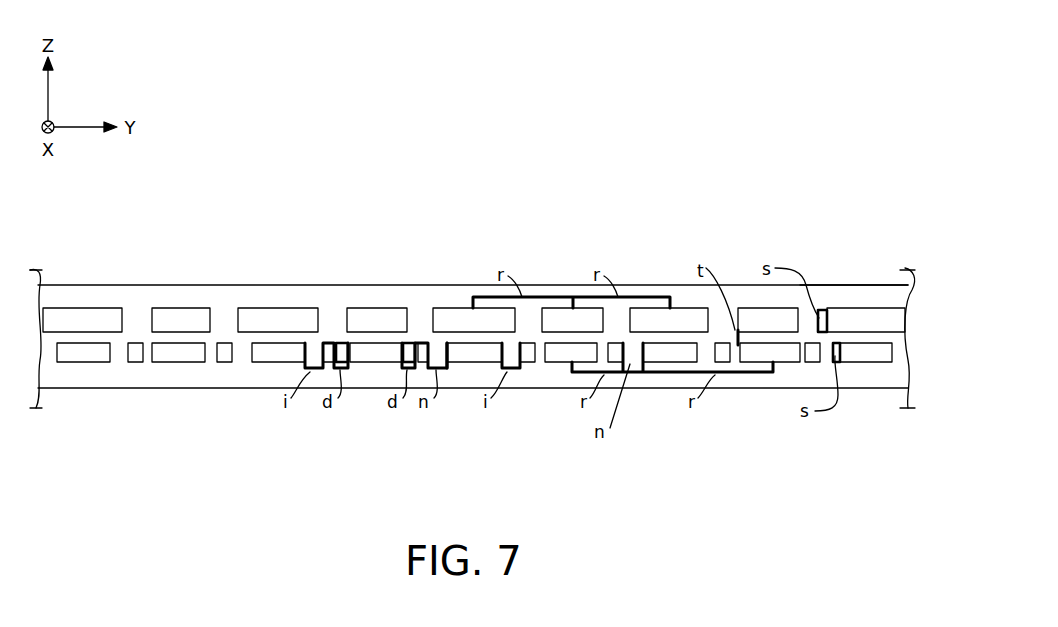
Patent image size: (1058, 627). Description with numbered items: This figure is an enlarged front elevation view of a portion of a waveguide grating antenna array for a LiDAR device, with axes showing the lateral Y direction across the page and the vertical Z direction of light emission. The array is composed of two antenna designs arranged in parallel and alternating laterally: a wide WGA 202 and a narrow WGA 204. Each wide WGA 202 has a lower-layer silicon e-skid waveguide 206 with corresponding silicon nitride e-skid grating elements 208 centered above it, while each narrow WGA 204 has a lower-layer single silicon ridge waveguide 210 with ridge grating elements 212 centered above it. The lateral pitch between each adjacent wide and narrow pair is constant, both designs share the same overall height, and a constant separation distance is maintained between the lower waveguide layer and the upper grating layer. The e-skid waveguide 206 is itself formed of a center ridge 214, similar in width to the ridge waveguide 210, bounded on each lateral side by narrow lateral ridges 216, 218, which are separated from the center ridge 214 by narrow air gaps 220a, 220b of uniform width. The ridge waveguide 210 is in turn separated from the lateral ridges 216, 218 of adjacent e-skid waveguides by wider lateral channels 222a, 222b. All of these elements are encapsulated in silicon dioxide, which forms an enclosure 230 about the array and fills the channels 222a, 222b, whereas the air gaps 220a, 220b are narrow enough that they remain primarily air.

The wide WGA 202 is at (467, 285).
The narrow WGA 204 is at (863, 285).
The e-skid waveguide 206 is at (773, 376).
The e-skid grating elements 208 is at (752, 312).
The ridge waveguide 210 is at (873, 357).
The ridge grating elements 212 is at (900, 316).
The center ridge 214 is at (383, 348).
The lateral ridge 216 is at (143, 340).
The lateral ridge 218 is at (225, 340).
The air gap 220a is at (343, 345).
The air gap 220b is at (408, 345).
The lateral channel 222a is at (118, 365).
The lateral channel 222b is at (236, 365).
The enclosure 230 is at (135, 293).